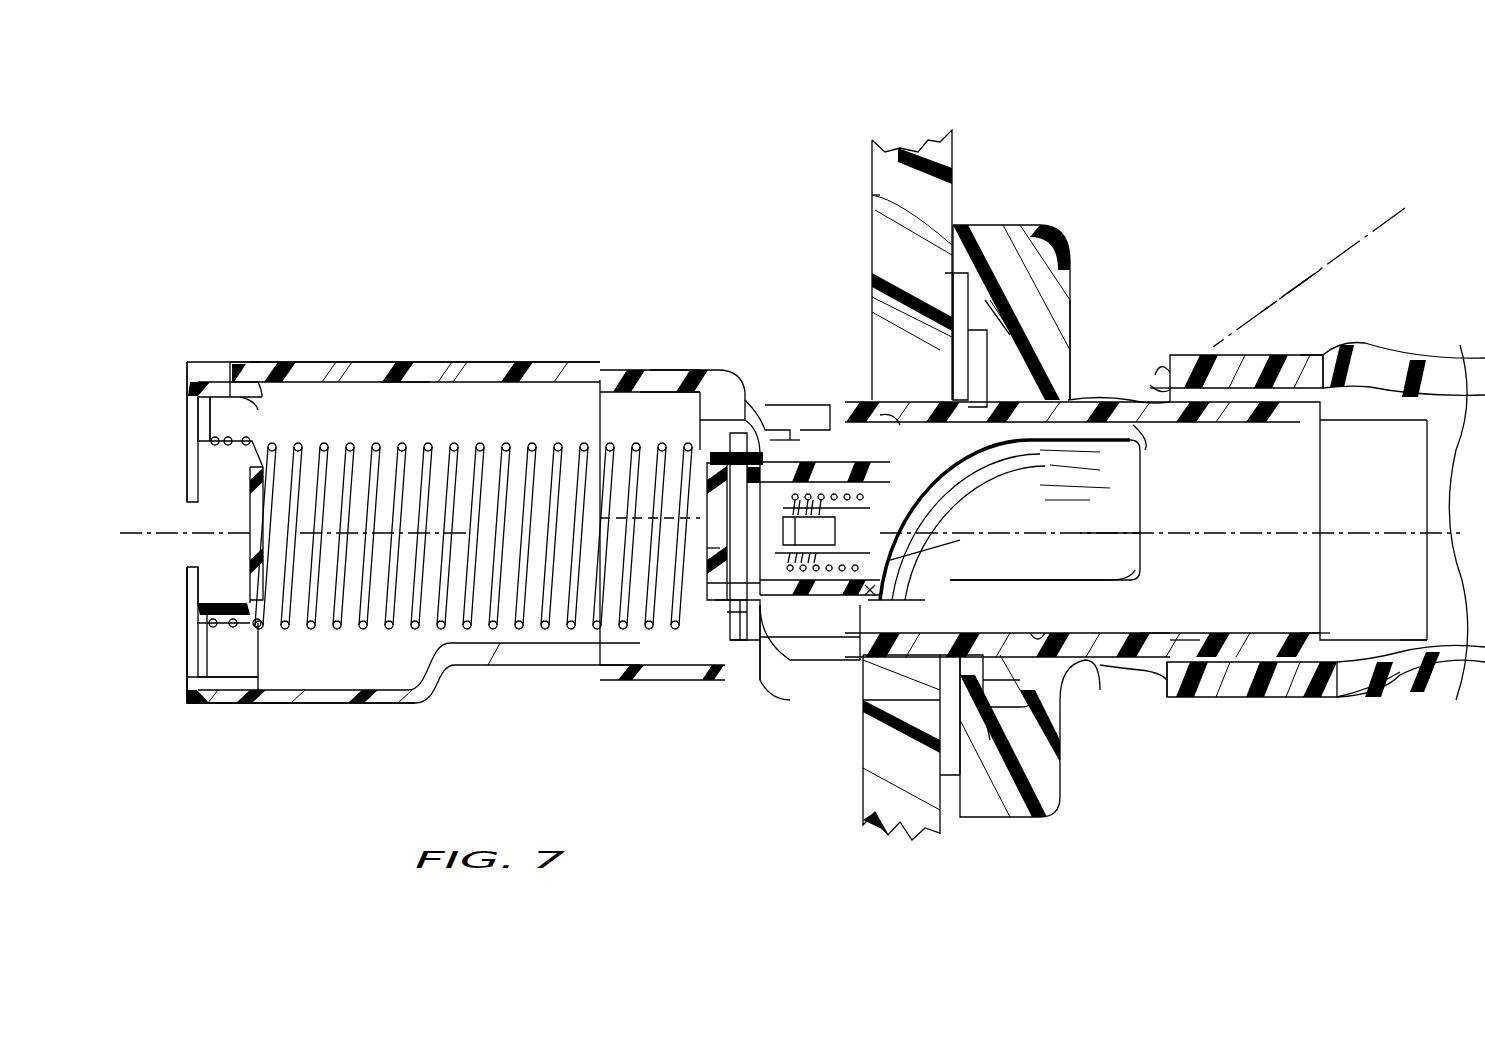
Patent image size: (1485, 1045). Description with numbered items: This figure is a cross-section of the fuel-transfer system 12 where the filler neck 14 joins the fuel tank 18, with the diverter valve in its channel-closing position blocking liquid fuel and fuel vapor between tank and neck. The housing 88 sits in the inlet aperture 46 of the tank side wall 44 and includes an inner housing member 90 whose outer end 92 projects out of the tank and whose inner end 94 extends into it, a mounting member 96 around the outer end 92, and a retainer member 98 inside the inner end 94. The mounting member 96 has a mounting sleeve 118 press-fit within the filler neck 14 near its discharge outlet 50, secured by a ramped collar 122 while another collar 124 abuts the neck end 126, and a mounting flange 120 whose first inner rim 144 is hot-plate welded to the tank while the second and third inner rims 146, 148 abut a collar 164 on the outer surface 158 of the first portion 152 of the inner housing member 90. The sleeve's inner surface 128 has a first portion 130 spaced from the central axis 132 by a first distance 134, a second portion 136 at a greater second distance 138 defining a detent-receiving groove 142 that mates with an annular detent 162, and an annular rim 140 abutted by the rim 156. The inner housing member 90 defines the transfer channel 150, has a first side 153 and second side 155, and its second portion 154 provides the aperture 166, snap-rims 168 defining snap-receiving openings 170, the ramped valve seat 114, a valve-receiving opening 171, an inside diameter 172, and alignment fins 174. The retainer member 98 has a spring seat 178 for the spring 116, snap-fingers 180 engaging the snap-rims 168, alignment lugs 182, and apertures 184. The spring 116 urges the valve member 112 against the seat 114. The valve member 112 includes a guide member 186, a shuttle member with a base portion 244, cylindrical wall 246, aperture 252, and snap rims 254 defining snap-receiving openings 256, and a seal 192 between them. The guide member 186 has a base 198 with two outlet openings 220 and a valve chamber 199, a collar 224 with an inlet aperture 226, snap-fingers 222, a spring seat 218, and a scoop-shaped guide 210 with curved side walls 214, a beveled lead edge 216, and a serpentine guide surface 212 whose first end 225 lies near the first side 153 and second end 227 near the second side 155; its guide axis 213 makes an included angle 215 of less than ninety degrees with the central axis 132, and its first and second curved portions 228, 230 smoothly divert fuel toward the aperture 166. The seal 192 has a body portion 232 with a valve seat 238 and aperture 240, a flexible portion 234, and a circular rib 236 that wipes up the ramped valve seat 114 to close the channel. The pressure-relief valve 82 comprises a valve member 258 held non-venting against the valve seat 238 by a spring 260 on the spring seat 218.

The fuel-transfer system 12 is at (1226, 172).
The filler neck 14 is at (1417, 687).
The fuel tank 18 is at (963, 158).
The side wall 44 is at (945, 834).
The inlet aperture 46 is at (883, 358).
The discharge outlet 50 is at (1155, 693).
The pressure-relief valve 82 is at (800, 444).
The housing 88 is at (181, 380).
The inner housing member 90 is at (808, 700).
The outer end 92 is at (1273, 668).
The inner end 94 is at (240, 710).
The mounting member 96 is at (1108, 305).
The retainer member 98 is at (197, 602).
The valve member 112 is at (565, 397).
The ramped valve seat 114 is at (733, 432).
The spring 116 is at (404, 414).
The mounting sleeve 118 is at (1293, 378).
The mounting flange 120 is at (1062, 790).
The ramped collar 122 is at (1391, 675).
The collar 124 is at (1150, 358).
The end 126 is at (1173, 705).
The inner surface 128 is at (1166, 398).
The first portion 130 is at (1347, 587).
The central axis 132 is at (1378, 530).
The first distance 134 is at (1358, 422).
The second portion 136 is at (1180, 637).
The second distance 138 is at (1220, 424).
The annular rim 140 is at (657, 370).
The detent-receiving groove 142 is at (1038, 633).
The first inner rim 144 is at (872, 195).
The second inner rim 146 is at (985, 305).
The third inner rim 148 is at (970, 710).
The transfer channel 150 is at (1416, 633).
The first portion 152 is at (1150, 617).
The first side 153 is at (328, 378).
The second portion 154 is at (487, 358).
The second side 155 is at (337, 704).
The rim 156 is at (1320, 631).
The outer surface 158 is at (1117, 658).
The annular detent 162 is at (1068, 324).
The collar 164 is at (958, 356).
The aperture 166 is at (601, 657).
The snap-rims 168 is at (266, 372).
The snap-receiving openings 170 is at (237, 357).
The valve-receiving opening 171 is at (180, 652).
The inside diameter 172 is at (330, 385).
The alignment fins 174 is at (460, 520).
The spring seat 178 is at (227, 468).
The snap-fingers 180 is at (241, 396).
The alignment lugs 182 is at (240, 663).
The apertures 184 is at (201, 424).
The guide member 186 is at (943, 368).
The seal 192 is at (738, 655).
The base 198 is at (833, 640).
The valve chamber 199 is at (840, 527).
The scoop-shaped guide 210 is at (960, 645).
The guide surface 212 is at (950, 458).
The guide axis 213 is at (1306, 283).
The curved side walls 214 is at (1085, 565).
The axis line 215 is at (1368, 242).
The beveled lead edge 216 is at (1140, 520).
The spring seat 218 is at (866, 498).
The openings 220 is at (847, 415).
The snap-fingers 222 is at (740, 650).
The collar 224 is at (750, 416).
The first end 225 is at (1150, 424).
The aperture 226 is at (792, 490).
The second end 227 is at (847, 675).
The first curved portion 228 is at (1040, 458).
The second curved portion 230 is at (1020, 590).
The body portion 232 is at (713, 552).
The flexible portion 234 is at (722, 438).
The circular rib 236 is at (786, 437).
The valve seat 238 is at (876, 590).
The aperture 240 is at (717, 503).
The base portion 244 is at (700, 395).
The cylindrical wall 246 is at (735, 650).
The aperture 252 is at (710, 548).
The snap rims 254 is at (892, 420).
The snap-receiving openings 256 is at (712, 425).
The valve member 258 is at (910, 550).
The spring 260 is at (920, 470).